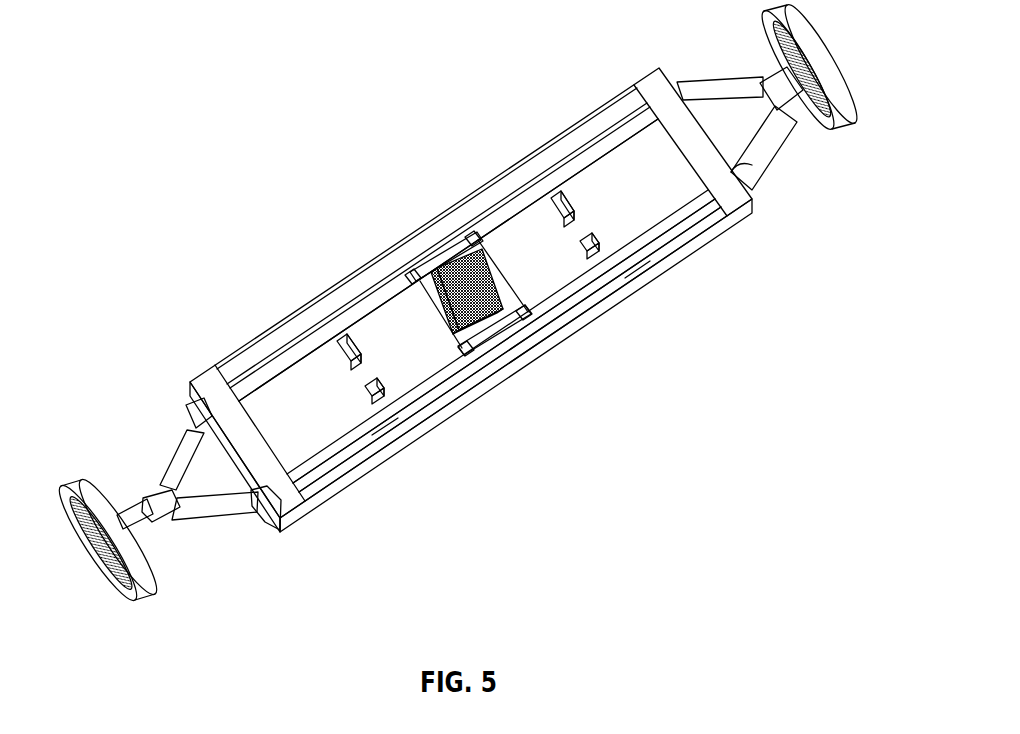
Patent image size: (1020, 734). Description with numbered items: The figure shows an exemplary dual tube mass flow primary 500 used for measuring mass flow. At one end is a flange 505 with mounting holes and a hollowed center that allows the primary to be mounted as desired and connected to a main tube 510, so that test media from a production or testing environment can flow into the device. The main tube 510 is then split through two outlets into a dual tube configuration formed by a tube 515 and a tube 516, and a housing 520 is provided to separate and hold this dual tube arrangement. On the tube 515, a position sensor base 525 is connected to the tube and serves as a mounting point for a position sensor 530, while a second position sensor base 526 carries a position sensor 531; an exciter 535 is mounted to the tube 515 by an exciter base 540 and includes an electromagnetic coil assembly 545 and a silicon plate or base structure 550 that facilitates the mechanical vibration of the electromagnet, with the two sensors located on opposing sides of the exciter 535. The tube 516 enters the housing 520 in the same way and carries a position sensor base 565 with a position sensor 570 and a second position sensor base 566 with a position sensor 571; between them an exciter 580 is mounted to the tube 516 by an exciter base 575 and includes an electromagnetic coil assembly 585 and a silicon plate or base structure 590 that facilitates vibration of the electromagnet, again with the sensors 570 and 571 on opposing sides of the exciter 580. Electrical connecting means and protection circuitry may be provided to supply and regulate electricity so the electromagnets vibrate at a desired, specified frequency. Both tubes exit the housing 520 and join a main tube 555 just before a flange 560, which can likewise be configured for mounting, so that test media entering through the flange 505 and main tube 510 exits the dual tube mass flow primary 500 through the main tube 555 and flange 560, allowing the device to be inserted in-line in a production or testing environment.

The dual tube mass flow primary 500 is at (210, 44).
The flange 505 is at (77, 483).
The main tube 510 is at (143, 507).
The tube 515 is at (180, 432).
The tube 516 is at (757, 153).
The housing 520 is at (227, 358).
The position sensor base 525 is at (340, 337).
The second position sensor base 526 is at (549, 190).
The position sensor 530 is at (337, 308).
The position sensor 531 is at (565, 186).
The exciter 535 is at (423, 267).
The exciter base 540 is at (387, 290).
The electromagnetic coil assembly 545 is at (466, 242).
The silicon plate or base structure 550 is at (483, 257).
The main tube 555 is at (783, 77).
The flange 560 is at (830, 40).
The position sensor base 565 is at (385, 430).
The second position sensor base 566 is at (637, 273).
The position sensor 570 is at (365, 390).
The position sensor 571 is at (594, 238).
The exciter base 575 is at (437, 380).
The exciter 580 is at (510, 363).
The electromagnetic coil assembly 585 is at (547, 333).
The silicon plate or base structure 590 is at (442, 306).